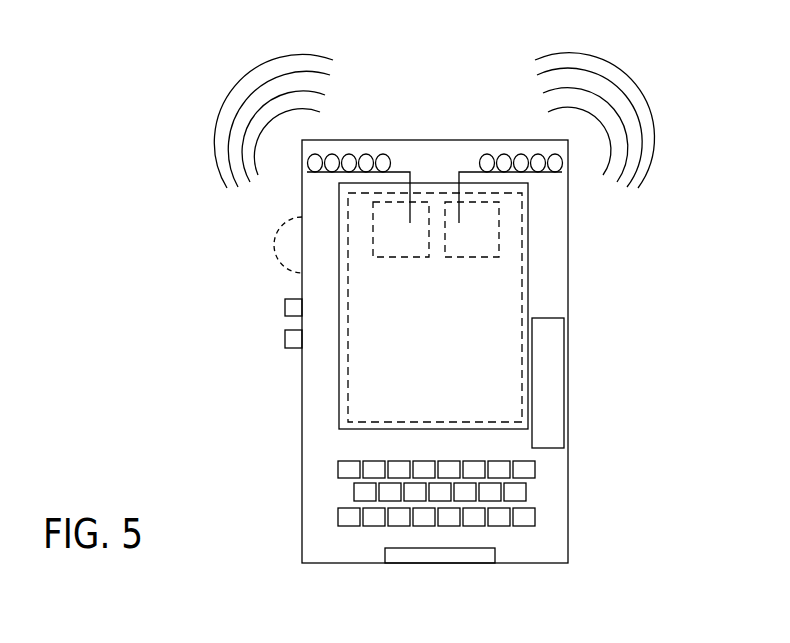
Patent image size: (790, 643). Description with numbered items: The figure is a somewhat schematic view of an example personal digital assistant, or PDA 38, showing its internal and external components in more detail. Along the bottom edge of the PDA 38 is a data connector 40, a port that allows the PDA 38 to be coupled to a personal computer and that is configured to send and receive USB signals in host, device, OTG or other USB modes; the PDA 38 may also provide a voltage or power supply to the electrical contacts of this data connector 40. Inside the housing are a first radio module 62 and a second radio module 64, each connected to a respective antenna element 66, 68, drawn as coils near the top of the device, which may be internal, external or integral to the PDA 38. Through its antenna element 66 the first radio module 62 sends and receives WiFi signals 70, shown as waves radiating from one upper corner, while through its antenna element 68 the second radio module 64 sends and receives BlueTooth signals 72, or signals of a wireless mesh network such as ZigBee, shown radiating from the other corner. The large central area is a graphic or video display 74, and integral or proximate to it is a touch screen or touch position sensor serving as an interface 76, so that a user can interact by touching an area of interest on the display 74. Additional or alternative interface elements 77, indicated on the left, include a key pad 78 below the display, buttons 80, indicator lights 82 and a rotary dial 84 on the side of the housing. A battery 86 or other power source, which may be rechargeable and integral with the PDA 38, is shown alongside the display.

The personal digital assistant (PDA) 38 is at (443, 140).
The data connector 40 is at (463, 560).
The first radio module 62 is at (373, 215).
The second radio module 64 is at (499, 225).
The antenna element 66 is at (342, 167).
The antenna element 68 is at (503, 163).
The WiFi signals 70 is at (278, 57).
The BlueTooth signals 72 is at (637, 85).
The display 74 is at (528, 280).
The interface (touch screen) 76 is at (522, 242).
The interface elements 77 is at (272, 443).
The key pad 78 is at (524, 471).
The buttons 80 is at (285, 308).
The indicator lights 82 is at (286, 348).
The rotary dial 84 is at (278, 248).
The battery 86 is at (564, 340).